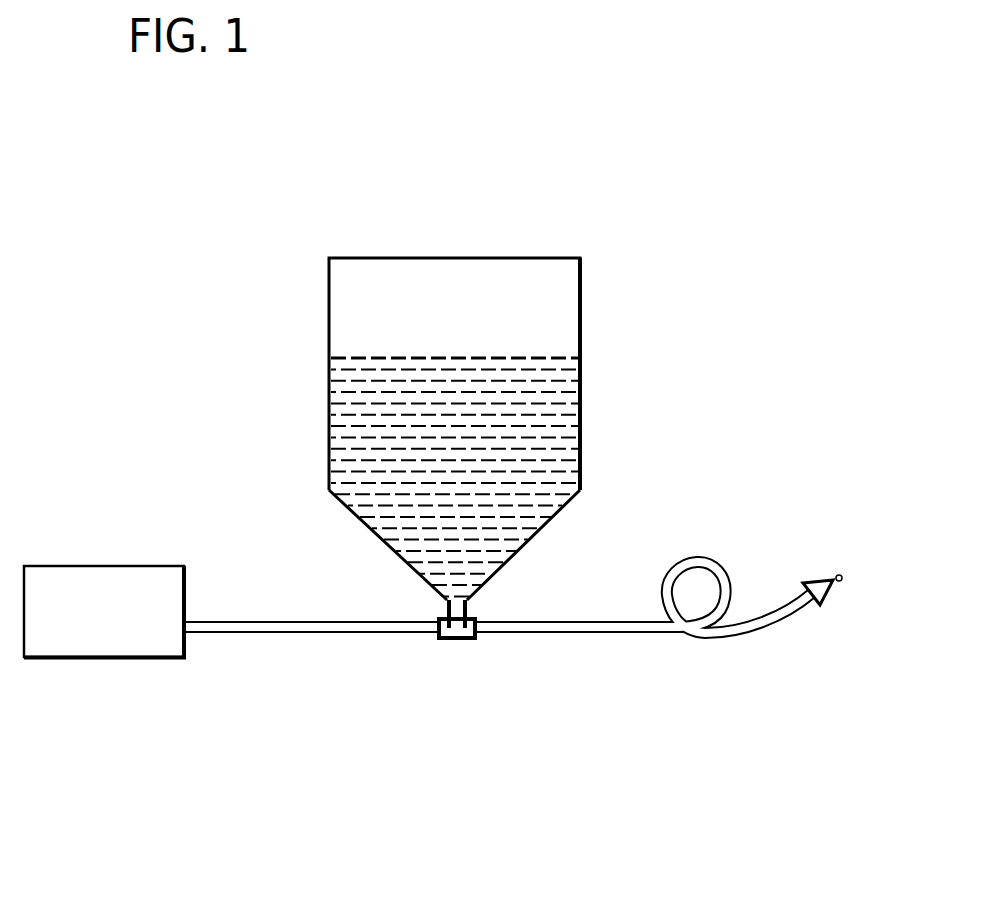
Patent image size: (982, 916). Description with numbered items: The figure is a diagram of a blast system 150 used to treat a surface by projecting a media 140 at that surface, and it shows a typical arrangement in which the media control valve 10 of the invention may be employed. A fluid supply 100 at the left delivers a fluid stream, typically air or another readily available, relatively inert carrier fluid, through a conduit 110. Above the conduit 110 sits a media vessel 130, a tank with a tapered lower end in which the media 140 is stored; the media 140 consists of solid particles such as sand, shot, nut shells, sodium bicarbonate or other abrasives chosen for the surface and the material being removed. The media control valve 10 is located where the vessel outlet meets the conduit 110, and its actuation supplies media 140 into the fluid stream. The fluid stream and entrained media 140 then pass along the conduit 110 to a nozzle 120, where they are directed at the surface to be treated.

The media control valve 10 is at (469, 641).
The fluid supply 100 is at (102, 658).
The conduit 110 is at (330, 634).
The nozzle 120 is at (828, 597).
The media vessel 130 is at (582, 446).
The media 140 is at (555, 428).
The blast system 150 is at (168, 398).